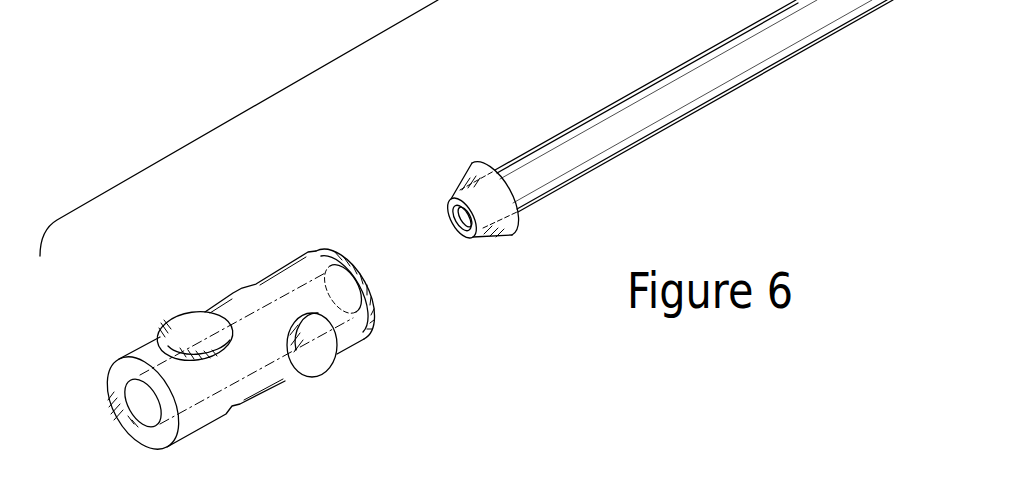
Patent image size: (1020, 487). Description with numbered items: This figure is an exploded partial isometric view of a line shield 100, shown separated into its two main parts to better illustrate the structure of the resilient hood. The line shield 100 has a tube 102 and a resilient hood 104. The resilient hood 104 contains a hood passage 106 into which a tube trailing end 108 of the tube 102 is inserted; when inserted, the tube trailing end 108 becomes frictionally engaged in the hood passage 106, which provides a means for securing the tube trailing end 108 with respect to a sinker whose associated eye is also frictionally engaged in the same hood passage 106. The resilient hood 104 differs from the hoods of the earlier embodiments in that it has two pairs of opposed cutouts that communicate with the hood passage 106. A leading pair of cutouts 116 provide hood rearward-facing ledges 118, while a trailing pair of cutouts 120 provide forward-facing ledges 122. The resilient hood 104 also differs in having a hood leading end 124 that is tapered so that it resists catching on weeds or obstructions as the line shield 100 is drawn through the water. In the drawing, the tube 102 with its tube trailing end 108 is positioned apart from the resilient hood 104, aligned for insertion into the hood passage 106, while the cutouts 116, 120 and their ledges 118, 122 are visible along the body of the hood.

The line shield 100 is at (288, 83).
The tube 102 is at (520, 136).
The resilient hood 104 is at (202, 288).
The hood passage 106 is at (142, 402).
The tube trailing end 108 is at (460, 187).
The leading pair of cutouts 116 is at (256, 283).
The hood rearward-facing ledges 118 is at (328, 337).
The trailing pair of cutouts 120 is at (194, 330).
The forward-facing ledges 122 is at (172, 340).
The hood leading end 124 is at (350, 258).